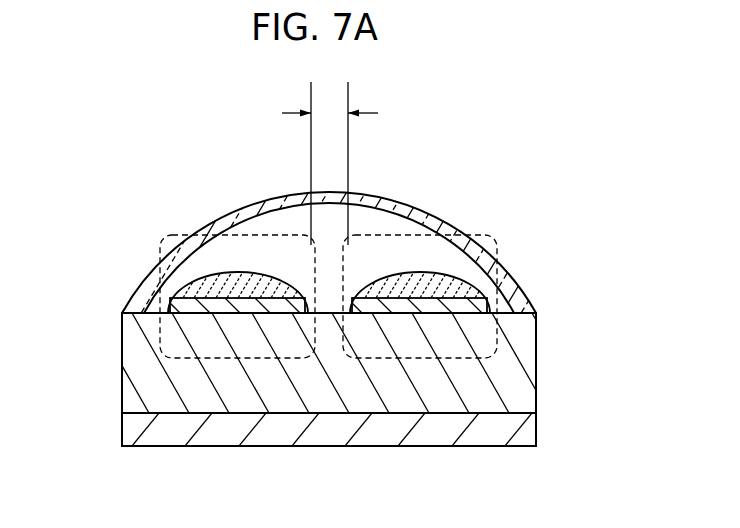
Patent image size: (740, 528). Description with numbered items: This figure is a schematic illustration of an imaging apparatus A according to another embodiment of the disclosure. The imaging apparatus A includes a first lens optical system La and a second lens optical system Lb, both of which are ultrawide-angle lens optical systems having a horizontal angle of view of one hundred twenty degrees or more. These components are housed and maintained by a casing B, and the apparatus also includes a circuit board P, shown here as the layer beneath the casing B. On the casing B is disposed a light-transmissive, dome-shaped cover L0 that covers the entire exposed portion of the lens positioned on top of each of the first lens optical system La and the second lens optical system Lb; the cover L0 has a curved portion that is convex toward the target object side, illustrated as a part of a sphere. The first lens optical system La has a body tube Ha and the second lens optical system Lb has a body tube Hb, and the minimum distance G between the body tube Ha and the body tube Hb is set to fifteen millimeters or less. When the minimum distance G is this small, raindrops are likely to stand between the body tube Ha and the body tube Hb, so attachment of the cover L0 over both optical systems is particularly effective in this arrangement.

The imaging apparatus A is at (447, 124).
The minimum distance G is at (330, 163).
The cover L0 is at (264, 203).
The first lens optical system La is at (164, 242).
The second lens optical system Lb is at (495, 240).
The body tube Ha is at (172, 306).
The body tube Hb is at (470, 307).
The casing B is at (140, 361).
The circuit board P is at (140, 425).